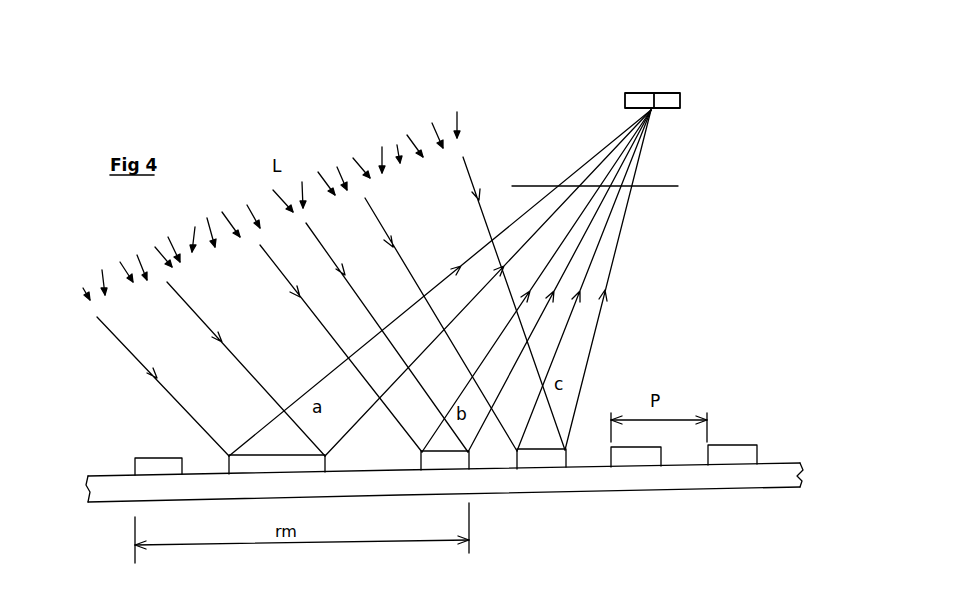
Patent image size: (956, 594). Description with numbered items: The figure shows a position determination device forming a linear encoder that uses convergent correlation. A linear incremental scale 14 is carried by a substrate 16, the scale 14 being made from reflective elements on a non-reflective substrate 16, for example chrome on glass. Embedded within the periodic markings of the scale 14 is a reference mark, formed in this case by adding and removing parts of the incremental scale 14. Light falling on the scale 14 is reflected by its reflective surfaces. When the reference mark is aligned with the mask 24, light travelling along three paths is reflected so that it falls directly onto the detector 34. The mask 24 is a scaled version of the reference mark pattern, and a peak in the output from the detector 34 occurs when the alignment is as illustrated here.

The linear incremental scale 14 is at (740, 441).
The substrate 16 is at (695, 475).
The mask 24 is at (661, 186).
The detector 34 is at (642, 100).